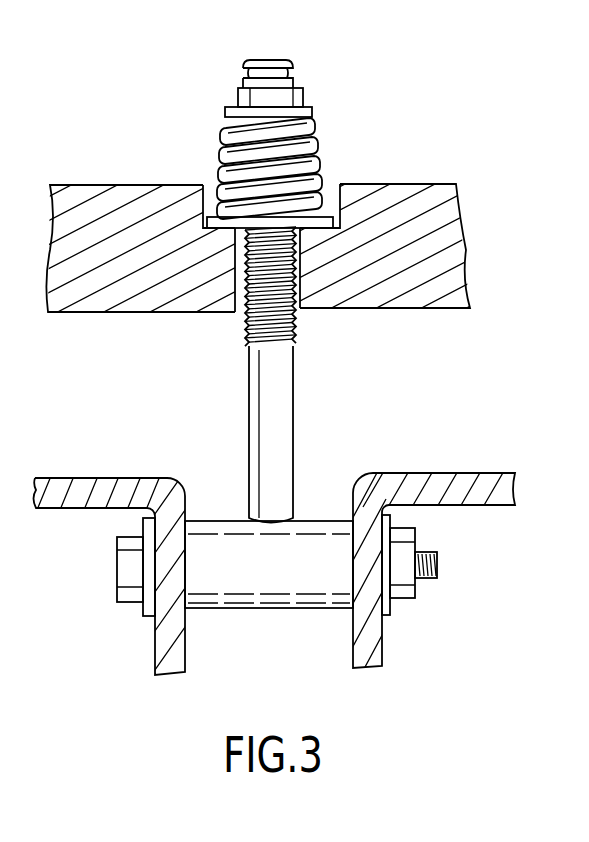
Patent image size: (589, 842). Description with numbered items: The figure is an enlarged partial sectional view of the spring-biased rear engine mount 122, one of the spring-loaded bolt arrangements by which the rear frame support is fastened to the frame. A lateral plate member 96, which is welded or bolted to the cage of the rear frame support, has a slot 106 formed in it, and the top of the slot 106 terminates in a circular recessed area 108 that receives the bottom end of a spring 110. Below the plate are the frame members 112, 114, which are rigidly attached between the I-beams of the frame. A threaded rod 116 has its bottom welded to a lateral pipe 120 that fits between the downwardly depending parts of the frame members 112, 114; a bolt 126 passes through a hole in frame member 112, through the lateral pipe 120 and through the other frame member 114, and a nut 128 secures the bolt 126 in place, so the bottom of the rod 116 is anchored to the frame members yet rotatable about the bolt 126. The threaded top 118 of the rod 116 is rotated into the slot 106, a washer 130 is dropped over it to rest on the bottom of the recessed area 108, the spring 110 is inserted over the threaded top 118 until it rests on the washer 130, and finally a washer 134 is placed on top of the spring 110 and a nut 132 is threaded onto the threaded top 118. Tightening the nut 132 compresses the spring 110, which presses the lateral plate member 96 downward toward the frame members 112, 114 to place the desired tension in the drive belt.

The lateral plate member 96 is at (450, 256).
The slot 106 is at (267, 291).
The circular recessed area 108 is at (206, 214).
The spring 110 is at (217, 135).
The frame member 112 is at (78, 477).
The frame member 114 is at (446, 472).
The threaded rod 116 is at (295, 430).
The threaded top 118 is at (240, 332).
The lateral pipe 120 is at (282, 598).
The spring-biased rear engine mount 122 is at (398, 382).
The bolt 126 is at (115, 572).
The nut 128 is at (400, 605).
The washer 130 is at (302, 235).
The nut 132 is at (305, 88).
The washer 134 is at (232, 106).